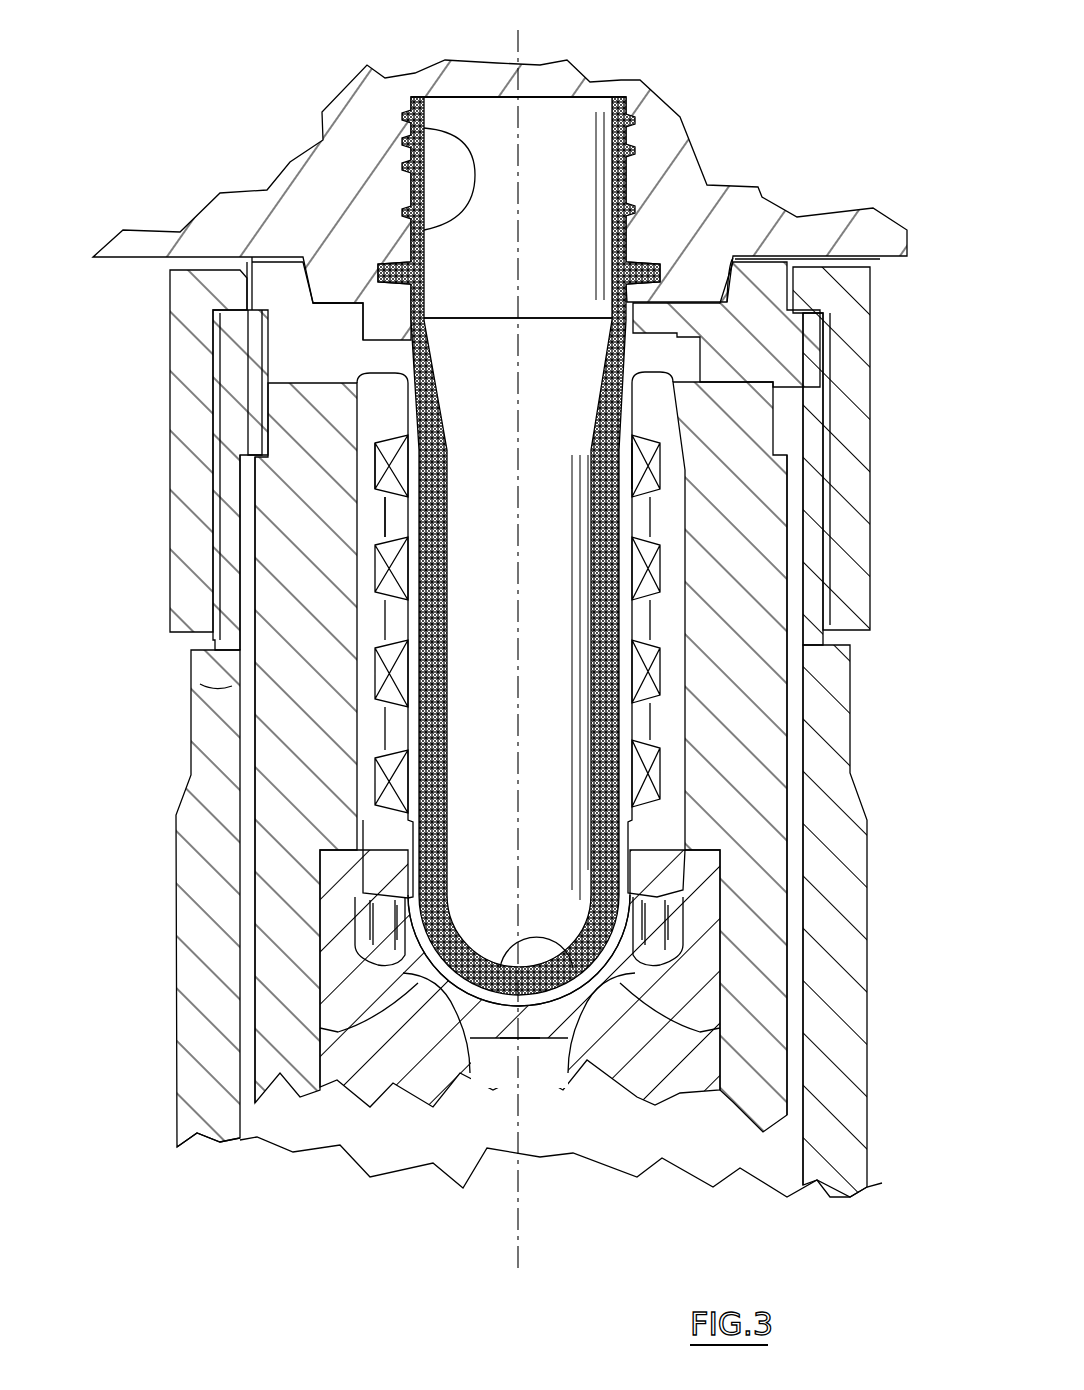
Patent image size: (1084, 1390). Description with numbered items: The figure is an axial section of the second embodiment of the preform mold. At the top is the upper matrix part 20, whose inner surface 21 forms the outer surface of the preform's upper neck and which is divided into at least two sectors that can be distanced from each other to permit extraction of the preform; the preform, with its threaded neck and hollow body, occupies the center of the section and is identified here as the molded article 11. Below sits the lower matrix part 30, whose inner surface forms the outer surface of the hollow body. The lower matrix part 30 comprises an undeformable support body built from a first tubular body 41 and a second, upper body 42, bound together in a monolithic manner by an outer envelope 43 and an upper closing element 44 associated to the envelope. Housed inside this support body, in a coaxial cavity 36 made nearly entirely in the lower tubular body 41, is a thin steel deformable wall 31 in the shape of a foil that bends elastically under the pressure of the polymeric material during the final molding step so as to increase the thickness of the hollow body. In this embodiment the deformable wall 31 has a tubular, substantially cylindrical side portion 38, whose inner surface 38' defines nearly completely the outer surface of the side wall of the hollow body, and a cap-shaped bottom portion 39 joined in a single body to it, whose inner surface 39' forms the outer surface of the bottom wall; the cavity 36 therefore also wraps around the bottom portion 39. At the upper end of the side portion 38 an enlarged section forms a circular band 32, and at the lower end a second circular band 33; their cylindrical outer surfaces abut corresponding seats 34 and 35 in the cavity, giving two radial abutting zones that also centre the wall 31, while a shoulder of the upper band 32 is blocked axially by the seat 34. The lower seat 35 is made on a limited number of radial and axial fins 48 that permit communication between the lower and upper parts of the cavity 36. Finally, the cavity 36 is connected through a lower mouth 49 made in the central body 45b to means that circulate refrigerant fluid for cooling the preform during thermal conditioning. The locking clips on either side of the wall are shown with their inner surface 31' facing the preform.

The preform 11 is at (490, 787).
The upper matrix part 20 is at (327, 193).
The inner surface 21 is at (405, 130).
The lower matrix part 30 is at (246, 670).
The deformable wall 31 is at (254, 624).
The locking clip 31' is at (278, 505).
The circular band 32 is at (365, 333).
The second circular band 33 is at (413, 915).
The seat 34 is at (370, 320).
The seat 35 is at (590, 1035).
The coaxial cavity 36 is at (657, 833).
The side portion 38 is at (785, 621).
The inner surface 38' is at (774, 634).
The bottom portion 39 is at (461, 1071).
The inner surface 39' is at (595, 1090).
The first tubular body 41 is at (273, 897).
The second upper body 42 is at (227, 340).
The outer envelope 43 is at (175, 1015).
The upper closing element 44 is at (178, 360).
The central body 45b is at (648, 1100).
The radial and axial fins 48 is at (720, 1028).
The lower mouth 49 is at (550, 1065).